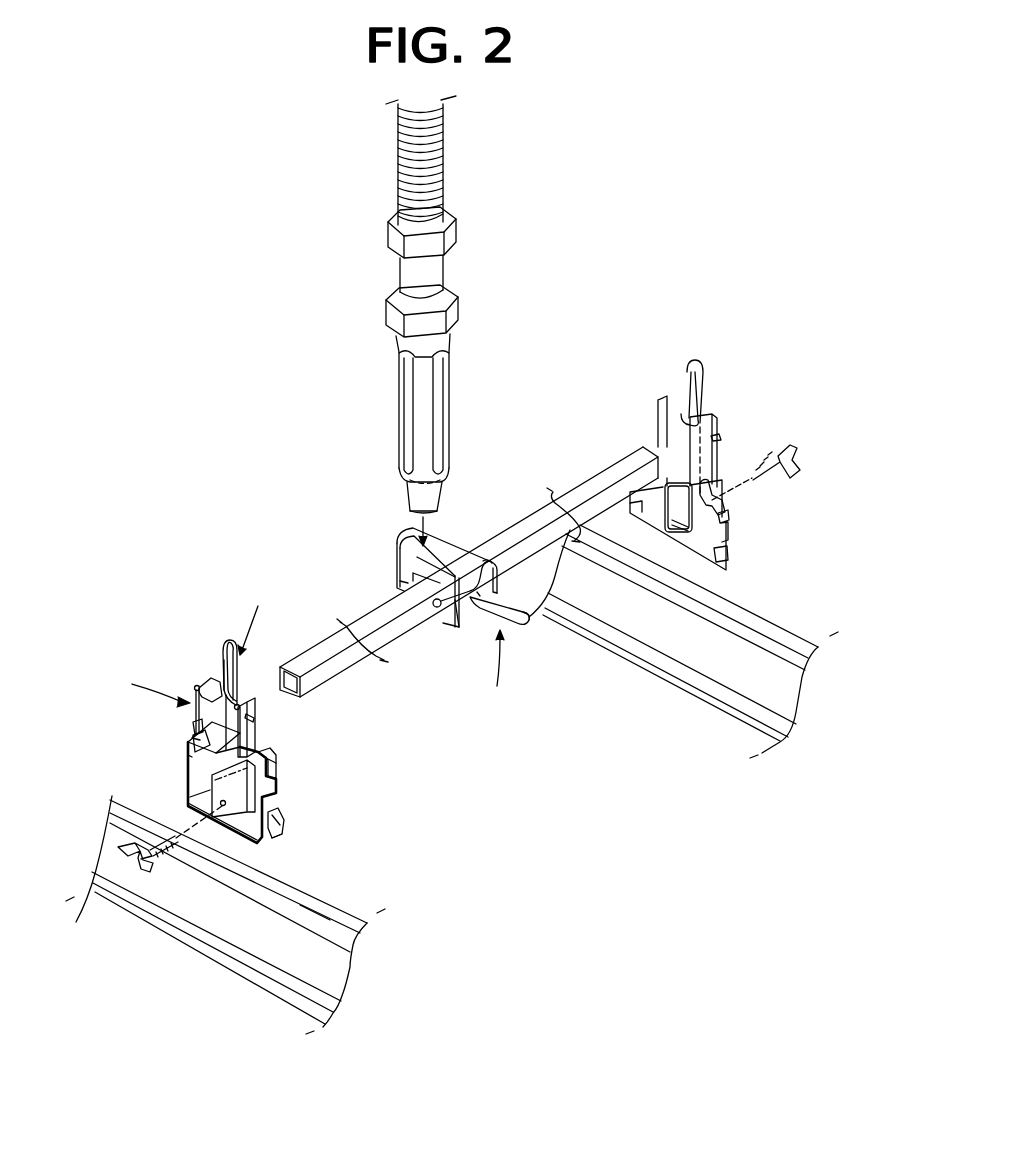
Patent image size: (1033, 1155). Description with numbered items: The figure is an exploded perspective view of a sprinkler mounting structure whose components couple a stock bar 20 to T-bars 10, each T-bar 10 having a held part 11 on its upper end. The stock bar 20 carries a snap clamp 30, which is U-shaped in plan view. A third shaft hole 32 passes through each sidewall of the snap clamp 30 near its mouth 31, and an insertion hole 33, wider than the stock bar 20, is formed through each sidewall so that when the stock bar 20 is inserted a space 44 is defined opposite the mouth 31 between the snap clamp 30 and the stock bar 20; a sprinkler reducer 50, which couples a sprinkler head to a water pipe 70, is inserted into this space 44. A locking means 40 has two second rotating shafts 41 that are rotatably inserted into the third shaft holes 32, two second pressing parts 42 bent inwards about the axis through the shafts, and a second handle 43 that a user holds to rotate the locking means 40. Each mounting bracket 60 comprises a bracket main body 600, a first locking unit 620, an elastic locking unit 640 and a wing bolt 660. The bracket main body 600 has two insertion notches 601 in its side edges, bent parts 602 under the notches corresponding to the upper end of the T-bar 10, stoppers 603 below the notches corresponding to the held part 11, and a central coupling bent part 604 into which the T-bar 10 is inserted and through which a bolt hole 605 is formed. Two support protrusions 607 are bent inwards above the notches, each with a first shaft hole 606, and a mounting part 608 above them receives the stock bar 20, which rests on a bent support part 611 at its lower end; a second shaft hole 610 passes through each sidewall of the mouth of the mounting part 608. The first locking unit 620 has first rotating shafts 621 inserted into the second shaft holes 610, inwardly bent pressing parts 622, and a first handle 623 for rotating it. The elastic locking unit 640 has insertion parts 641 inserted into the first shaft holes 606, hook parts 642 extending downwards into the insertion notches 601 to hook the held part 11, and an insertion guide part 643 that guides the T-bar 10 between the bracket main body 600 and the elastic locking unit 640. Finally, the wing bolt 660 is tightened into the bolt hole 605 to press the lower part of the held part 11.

The T-bar 10 is at (320, 960).
The held part 11 is at (316, 925).
The stock bar 20 is at (337, 664).
The snap clamp 30 is at (437, 546).
The mouth 31 is at (457, 630).
The third shaft hole 32 is at (485, 546).
The insertion hole 33 is at (412, 581).
The locking means 40 is at (493, 621).
The second rotating shaft 41 is at (436, 608).
The second pressing part 42 is at (476, 600).
The second handle 43 is at (532, 618).
The space 44 is at (443, 540).
The sprinkler reducer 50 is at (440, 408).
The mounting bracket 60 is at (212, 787).
The water pipe 70 is at (445, 166).
The bracket main body 600 is at (223, 852).
The insertion notch 601 is at (278, 790).
The bent part 602 is at (280, 800).
The stopper 603 is at (288, 834).
The coupling bent part 604 is at (190, 795).
The bolt hole 605 is at (212, 808).
The first shaft hole 606 is at (278, 782).
The support protrusion 607 is at (278, 768).
The mounting part 608 is at (255, 700).
The second shaft hole 610 is at (198, 686).
The bent support part 611 is at (188, 758).
The first locking unit 620 is at (253, 663).
The first rotating shaft 621 is at (198, 686).
The pressing part 622 is at (198, 740).
The first handle 623 is at (229, 658).
The elastic locking unit 640 is at (221, 808).
The insertion part 641 is at (254, 735).
The hook part 642 is at (290, 820).
The insertion guide part 643 is at (268, 843).
The wing bolt 660 is at (122, 856).